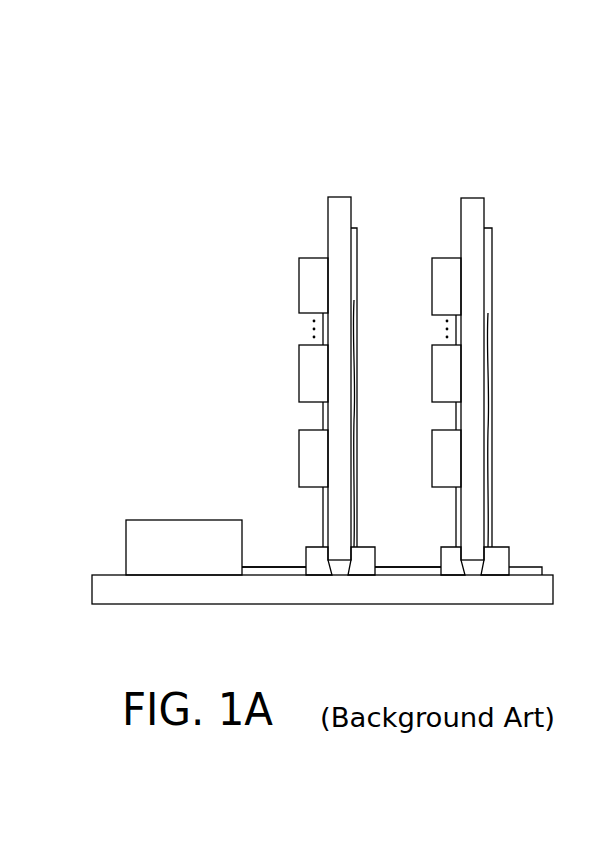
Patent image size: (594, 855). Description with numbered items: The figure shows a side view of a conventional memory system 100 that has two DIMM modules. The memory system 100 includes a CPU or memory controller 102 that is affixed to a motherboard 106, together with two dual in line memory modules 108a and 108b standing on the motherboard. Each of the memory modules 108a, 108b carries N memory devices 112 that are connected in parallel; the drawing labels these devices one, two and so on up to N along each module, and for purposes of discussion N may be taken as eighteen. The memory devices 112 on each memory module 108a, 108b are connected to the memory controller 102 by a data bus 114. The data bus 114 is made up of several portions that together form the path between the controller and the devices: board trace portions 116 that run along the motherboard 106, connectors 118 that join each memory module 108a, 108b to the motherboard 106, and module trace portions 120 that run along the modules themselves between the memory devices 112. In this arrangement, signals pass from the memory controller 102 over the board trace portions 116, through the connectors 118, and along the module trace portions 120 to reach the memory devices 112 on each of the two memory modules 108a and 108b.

The memory system 100 is at (183, 190).
The memory controller 102 is at (183, 520).
The motherboard 106 is at (352, 604).
The dual in line memory module 108a is at (340, 197).
The dual in line memory module 108b is at (472, 198).
The memory devices 112 is at (298, 288).
The data bus 114 is at (262, 568).
The board trace portions 116 is at (272, 568).
The connectors 118 is at (361, 547).
The module trace portions 120 is at (323, 415).